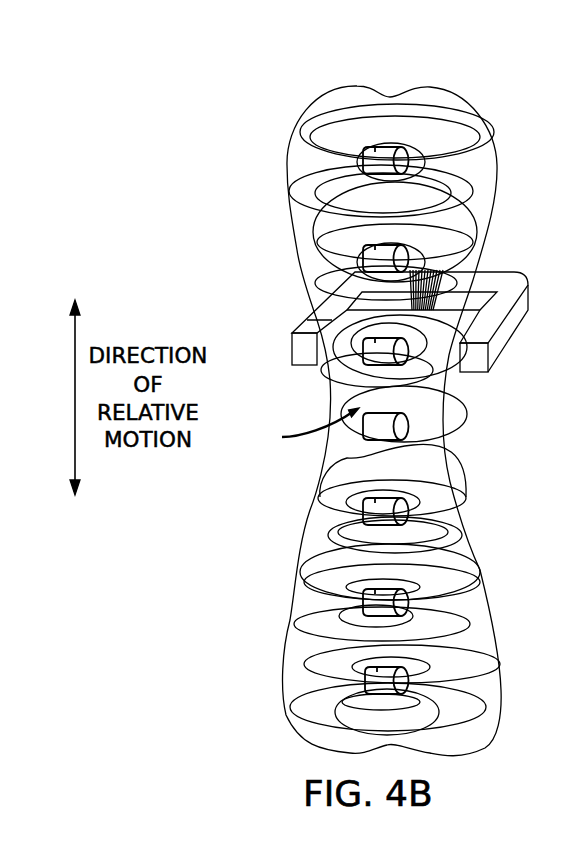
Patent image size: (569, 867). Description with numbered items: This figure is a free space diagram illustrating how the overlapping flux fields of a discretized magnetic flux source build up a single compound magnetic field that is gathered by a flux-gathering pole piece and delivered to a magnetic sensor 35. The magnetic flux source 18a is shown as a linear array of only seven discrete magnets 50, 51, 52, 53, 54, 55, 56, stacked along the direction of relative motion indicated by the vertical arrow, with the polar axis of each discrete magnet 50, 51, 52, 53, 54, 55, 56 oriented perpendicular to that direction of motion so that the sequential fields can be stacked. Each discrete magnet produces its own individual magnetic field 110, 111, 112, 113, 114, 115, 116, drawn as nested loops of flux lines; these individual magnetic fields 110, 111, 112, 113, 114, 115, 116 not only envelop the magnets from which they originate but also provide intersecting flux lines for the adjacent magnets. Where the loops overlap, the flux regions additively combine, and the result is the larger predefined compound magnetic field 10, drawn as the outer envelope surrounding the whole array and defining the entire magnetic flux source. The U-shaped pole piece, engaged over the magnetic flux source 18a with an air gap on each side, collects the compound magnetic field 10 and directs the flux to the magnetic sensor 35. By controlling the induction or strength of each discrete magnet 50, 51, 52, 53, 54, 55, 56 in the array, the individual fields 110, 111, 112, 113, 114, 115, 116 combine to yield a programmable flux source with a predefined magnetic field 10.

The compound magnetic field 10 is at (498, 733).
The magnetic sensor 35 is at (448, 262).
The magnetic flux source 18a is at (301, 427).
The discrete magnet 50 is at (375, 147).
The discrete magnet 51 is at (365, 246).
The discrete magnet 52 is at (350, 348).
The discrete magnet 53 is at (407, 428).
The discrete magnet 54 is at (387, 502).
The discrete magnet 55 is at (392, 592).
The discrete magnet 56 is at (398, 672).
The magnetic field 110 is at (292, 207).
The magnetic field 111 is at (308, 297).
The magnetic field 112 is at (327, 385).
The magnetic field 113 is at (330, 455).
The magnetic field 114 is at (320, 555).
The magnetic field 115 is at (292, 644).
The magnetic field 116 is at (308, 732).